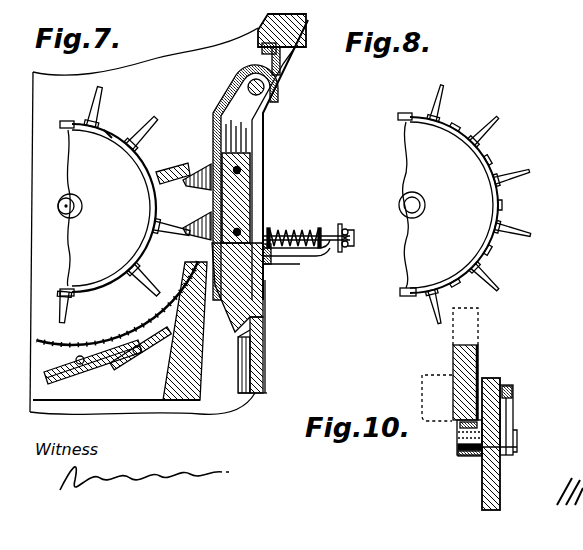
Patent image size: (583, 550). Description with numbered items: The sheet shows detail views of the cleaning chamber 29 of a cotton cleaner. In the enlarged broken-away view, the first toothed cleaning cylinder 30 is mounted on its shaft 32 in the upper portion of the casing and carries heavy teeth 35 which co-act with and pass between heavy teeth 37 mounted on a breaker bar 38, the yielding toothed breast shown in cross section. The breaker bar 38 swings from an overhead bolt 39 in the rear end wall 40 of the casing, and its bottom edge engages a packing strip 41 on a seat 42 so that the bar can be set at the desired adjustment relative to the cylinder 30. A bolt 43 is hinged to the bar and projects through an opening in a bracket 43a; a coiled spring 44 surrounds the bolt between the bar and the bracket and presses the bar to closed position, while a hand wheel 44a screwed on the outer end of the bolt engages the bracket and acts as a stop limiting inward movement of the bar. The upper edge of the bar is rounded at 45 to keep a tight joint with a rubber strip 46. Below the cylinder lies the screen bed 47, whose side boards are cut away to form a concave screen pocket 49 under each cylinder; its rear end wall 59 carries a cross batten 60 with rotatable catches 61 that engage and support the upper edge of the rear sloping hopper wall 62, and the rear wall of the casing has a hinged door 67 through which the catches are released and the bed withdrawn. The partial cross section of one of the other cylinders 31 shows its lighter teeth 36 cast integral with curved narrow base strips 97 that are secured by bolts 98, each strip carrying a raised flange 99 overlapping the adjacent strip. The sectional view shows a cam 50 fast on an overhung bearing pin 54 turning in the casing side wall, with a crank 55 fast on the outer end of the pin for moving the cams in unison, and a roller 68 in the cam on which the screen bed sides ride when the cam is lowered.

In FIG. 7, the cleaning chamber 29 is at (158, 62).
In FIG. 10, the cleaning chamber 29 is at (500, 478).
In FIG. 7, the toothed cleaning cylinder 30 is at (112, 134).
In FIG. 8, the toothed cleaning cylinder 31 is at (484, 257).
In FIG. 7, the shaft 32 is at (66, 198).
In FIG. 8, the shaft 32 is at (402, 222).
In FIG. 7, the teeth 35 is at (158, 131).
In FIG. 8, the teeth 36 is at (494, 130).
In FIG. 7, the heavy teeth 37 is at (176, 178).
In FIG. 7, the breaker bar 38 is at (247, 183).
In FIG. 7, the overhead bolt 39 is at (280, 95).
In FIG. 7, the rear end wall 40 is at (268, 298).
In FIG. 7, the packing strip 41 is at (290, 266).
In FIG. 7, the seat 42 is at (268, 284).
In FIG. 7, the bolt 43 is at (352, 246).
In FIG. 7, the bracket 43a is at (326, 236).
In FIG. 7, the coiled spring 44 is at (297, 236).
In FIG. 7, the hand wheel 44a is at (346, 230).
In FIG. 7, the rounded upper edge 45 is at (287, 65).
In FIG. 7, the rubber strip 46 is at (285, 78).
In FIG. 7, the screen bed 47 is at (143, 402).
In FIG. 10, the screen bed 47 is at (480, 358).
In FIG. 7, the concave screen pocket 49 is at (70, 338).
In FIG. 10, the cam 50 is at (457, 440).
In FIG. 10, the overhung bearing pin 54 is at (462, 452).
In FIG. 10, the crank 55 is at (508, 410).
In FIG. 7, the rear end wall of the screen bed 59 is at (197, 371).
In FIG. 7, the cross batten 60 is at (193, 345).
In FIG. 7, the rotatable catch 61 is at (146, 356).
In FIG. 7, the rear sloping hopper wall 62 is at (85, 400).
In FIG. 7, the door 67 is at (262, 393).
In FIG. 10, the roller 68 is at (457, 432).
In FIG. 7, the curved narrow base strip 97 is at (160, 203).
In FIG. 8, the curved narrow base strip 97 is at (452, 126).
In FIG. 7, the bolt 98 is at (170, 170).
In FIG. 8, the bolt 98 is at (506, 182).
In FIG. 7, the raised flange 99 is at (152, 250).
In FIG. 8, the raised flange 99 is at (505, 205).